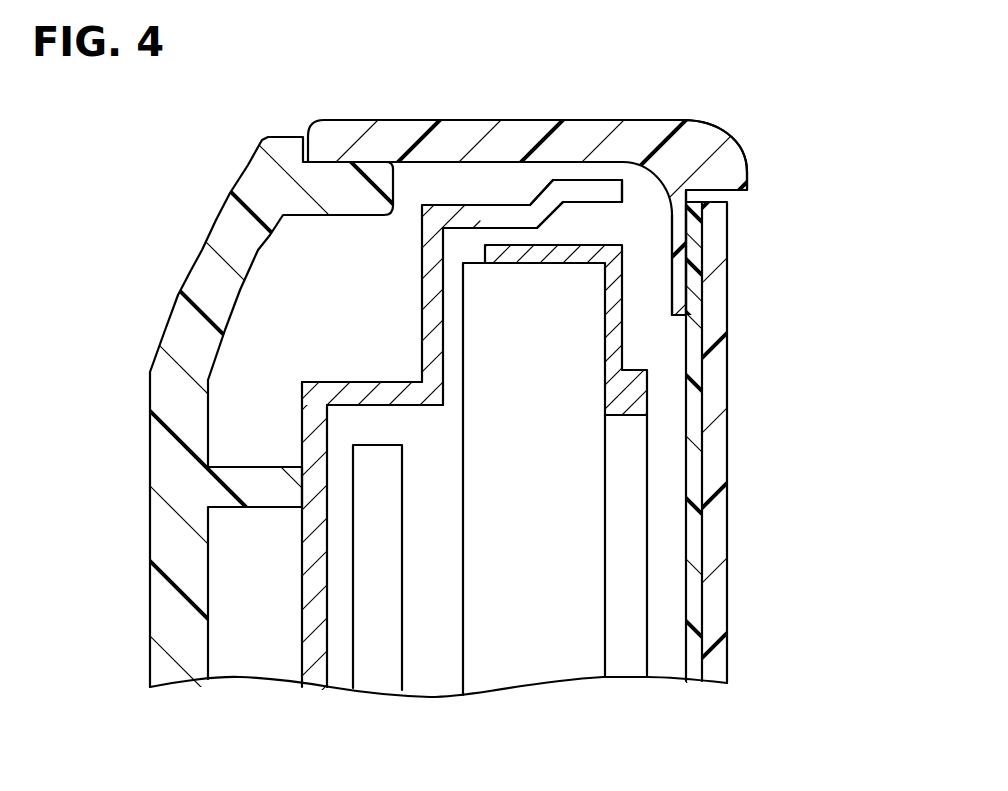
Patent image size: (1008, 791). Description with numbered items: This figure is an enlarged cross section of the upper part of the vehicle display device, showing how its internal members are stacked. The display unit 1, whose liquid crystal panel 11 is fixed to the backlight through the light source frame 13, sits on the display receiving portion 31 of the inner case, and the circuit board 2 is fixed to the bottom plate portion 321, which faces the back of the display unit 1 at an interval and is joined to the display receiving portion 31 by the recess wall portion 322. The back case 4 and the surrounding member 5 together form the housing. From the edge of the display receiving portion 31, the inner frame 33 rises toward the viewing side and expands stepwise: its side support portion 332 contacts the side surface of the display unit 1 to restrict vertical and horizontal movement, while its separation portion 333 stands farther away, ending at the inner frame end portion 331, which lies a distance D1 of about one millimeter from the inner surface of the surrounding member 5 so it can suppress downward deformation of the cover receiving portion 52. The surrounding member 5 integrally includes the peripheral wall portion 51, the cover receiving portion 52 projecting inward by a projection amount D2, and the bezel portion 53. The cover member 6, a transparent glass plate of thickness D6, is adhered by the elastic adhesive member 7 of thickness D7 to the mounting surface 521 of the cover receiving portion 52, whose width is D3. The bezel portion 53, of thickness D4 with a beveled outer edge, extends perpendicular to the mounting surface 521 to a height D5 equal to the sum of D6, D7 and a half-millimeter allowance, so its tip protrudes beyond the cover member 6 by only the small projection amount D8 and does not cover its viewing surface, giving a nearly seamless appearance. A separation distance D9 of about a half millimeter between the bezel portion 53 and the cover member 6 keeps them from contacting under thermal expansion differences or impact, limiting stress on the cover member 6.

The display unit 1 is at (527, 657).
The liquid crystal panel 11 is at (663, 657).
The light source frame 13 is at (610, 342).
The circuit board 2 is at (377, 657).
The display receiving portion 31 is at (420, 320).
The bottom plate portion 321 is at (302, 652).
The recess wall portion 322 is at (347, 382).
The inner frame 33 is at (482, 195).
The inner frame end portion 331 is at (613, 188).
The side support portion 332 is at (512, 220).
The separation portion 333 is at (585, 193).
The back case 4 is at (162, 482).
The surrounding member 5 is at (372, 112).
The peripheral wall portion 51 is at (408, 132).
The cover receiving portion 52 is at (677, 280).
The mounting surface 521 is at (687, 205).
The bezel portion 53 is at (747, 163).
The cover member 6 is at (713, 503).
The elastic adhesive member 7 is at (695, 255).
The distance D1 is at (543, 180).
The projection amount D2 is at (870, 315).
The width D3 is at (858, 191).
The thickness D4 is at (690, 120).
The height D5 is at (747, 172).
The thickness D6 is at (702, 683).
The thickness D7 is at (658, 333).
The projection amount D8 is at (727, 202).
The separation distance D9 is at (729, 202).